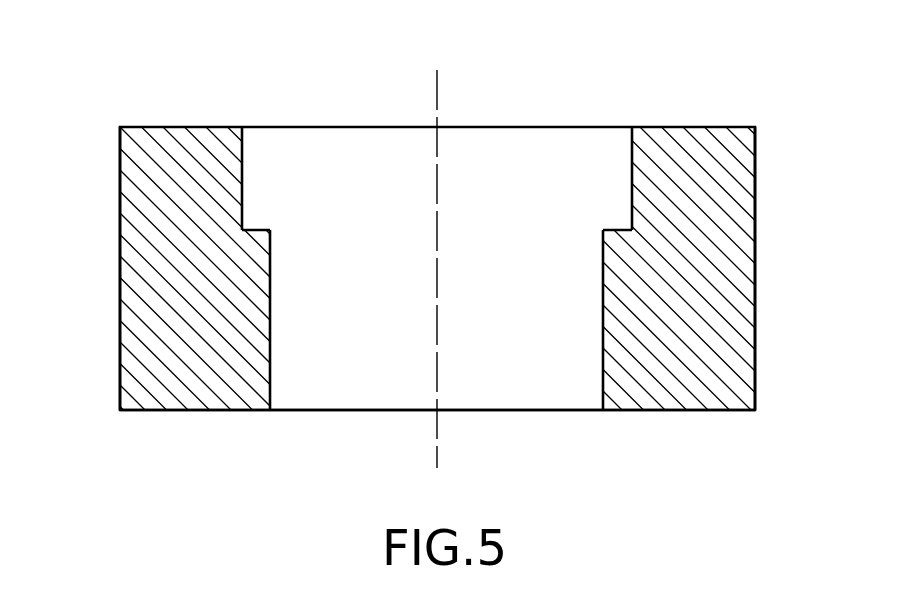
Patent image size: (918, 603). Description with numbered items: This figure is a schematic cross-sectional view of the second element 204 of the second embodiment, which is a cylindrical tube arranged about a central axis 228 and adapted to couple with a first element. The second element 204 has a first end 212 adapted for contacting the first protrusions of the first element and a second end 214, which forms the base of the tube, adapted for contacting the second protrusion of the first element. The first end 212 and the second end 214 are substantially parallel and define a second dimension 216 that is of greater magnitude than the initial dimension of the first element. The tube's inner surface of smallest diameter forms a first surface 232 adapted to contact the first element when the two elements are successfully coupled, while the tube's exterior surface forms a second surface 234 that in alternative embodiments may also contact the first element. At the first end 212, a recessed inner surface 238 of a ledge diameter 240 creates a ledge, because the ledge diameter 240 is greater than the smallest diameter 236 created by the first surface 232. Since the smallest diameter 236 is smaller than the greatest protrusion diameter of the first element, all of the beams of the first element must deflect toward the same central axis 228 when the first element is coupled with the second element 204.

The second element 204 is at (722, 178).
The first end 212 is at (253, 230).
The second end 214 is at (242, 410).
The second dimension 216 is at (603, 230).
The central axis 228 is at (436, 249).
The first surface 232 is at (270, 278).
The second surface 234 is at (119, 146).
The smallest diameter 236 is at (603, 354).
The recessed inner surface 238 is at (243, 141).
The ledge diameter 240 is at (632, 178).